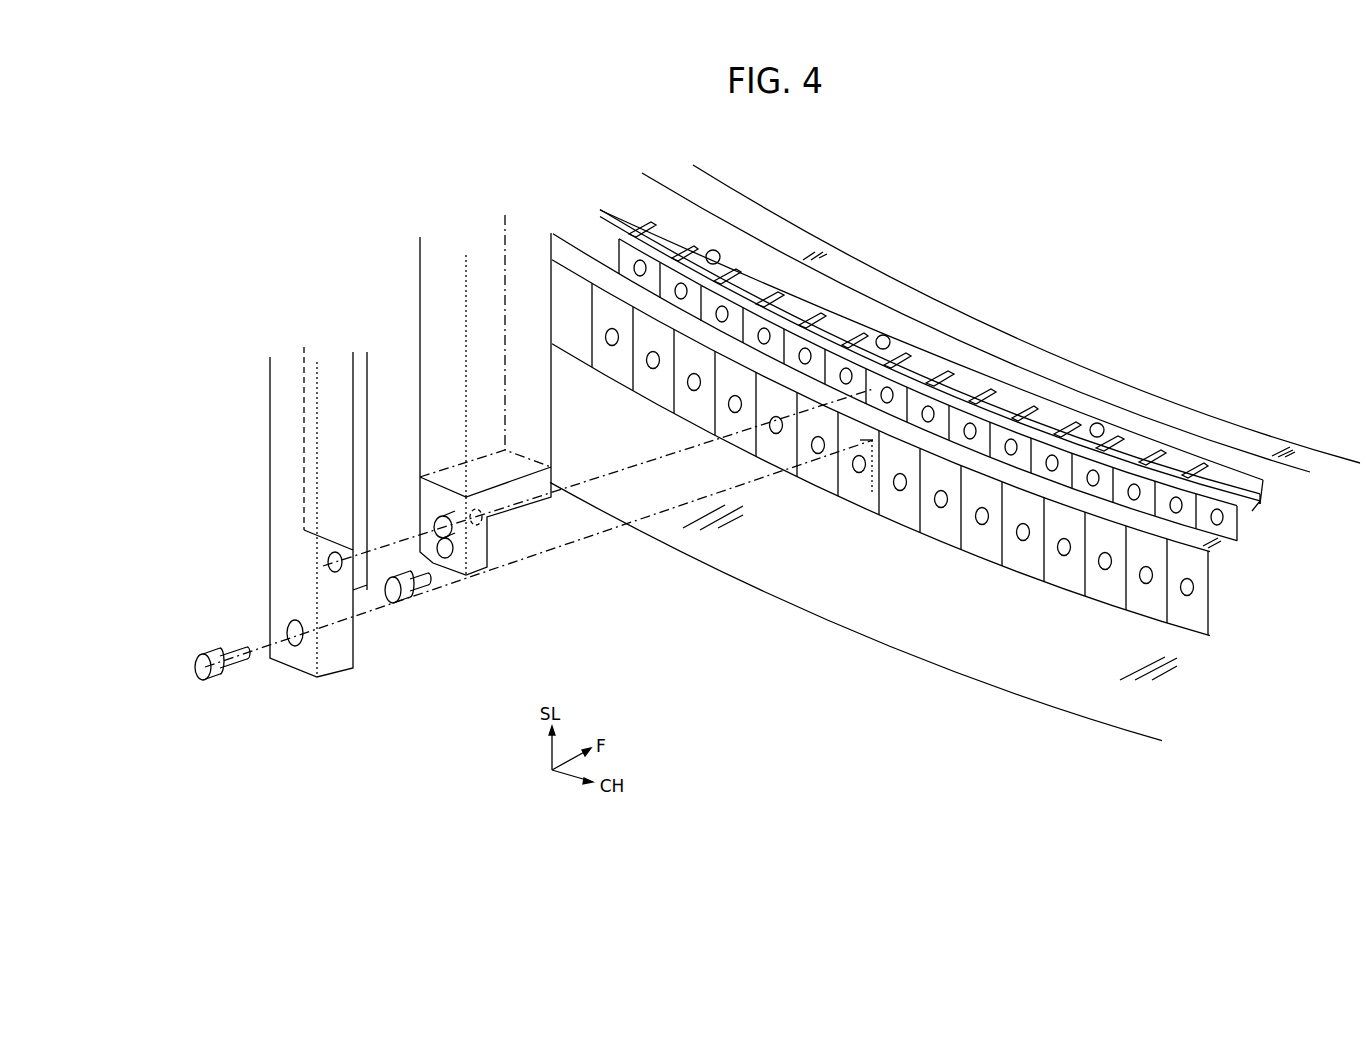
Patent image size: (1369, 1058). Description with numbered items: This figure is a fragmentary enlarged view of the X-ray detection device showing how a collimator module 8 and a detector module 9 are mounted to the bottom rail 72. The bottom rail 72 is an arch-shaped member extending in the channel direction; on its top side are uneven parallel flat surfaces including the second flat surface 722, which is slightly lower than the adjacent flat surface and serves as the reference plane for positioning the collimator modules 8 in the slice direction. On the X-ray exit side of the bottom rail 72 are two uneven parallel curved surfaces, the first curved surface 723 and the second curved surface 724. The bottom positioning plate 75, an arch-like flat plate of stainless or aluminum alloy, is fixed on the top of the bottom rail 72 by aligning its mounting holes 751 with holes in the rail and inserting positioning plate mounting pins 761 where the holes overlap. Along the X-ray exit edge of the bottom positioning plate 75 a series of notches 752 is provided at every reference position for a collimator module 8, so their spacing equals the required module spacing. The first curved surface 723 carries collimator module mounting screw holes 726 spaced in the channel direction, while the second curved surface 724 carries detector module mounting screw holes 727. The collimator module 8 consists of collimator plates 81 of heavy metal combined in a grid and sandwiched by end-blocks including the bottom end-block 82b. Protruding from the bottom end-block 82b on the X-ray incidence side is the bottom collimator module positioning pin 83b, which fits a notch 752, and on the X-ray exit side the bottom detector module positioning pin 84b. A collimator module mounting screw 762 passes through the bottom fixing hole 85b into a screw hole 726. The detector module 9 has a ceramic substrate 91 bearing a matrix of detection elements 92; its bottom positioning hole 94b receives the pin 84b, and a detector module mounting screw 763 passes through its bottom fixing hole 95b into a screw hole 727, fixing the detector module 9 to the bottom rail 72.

The bottom rail 72 is at (1150, 303).
The bottom positioning plate 75 is at (1242, 470).
The mounting holes 751 is at (730, 246).
The notches 752 is at (1030, 403).
The positioning plate mounting pins 761 is at (725, 246).
The second flat surface 722 is at (1262, 508).
The first curved surface 723 is at (1232, 541).
The second curved surface 724 is at (1198, 626).
The collimator module mounting screw holes 726 is at (1011, 455).
The detector module mounting screw holes 727 is at (818, 453).
The collimator module 8 is at (410, 257).
The collimator plates 81 is at (427, 300).
The bottom end-block 82b is at (478, 563).
The bottom collimator module positioning pin 83b is at (473, 517).
The bottom detector module positioning pin 84b is at (433, 522).
The bottom fixing hole 85b is at (443, 552).
The detector module 9 is at (262, 380).
The substrate 91 is at (273, 528).
The detection elements 92 is at (360, 418).
The bottom positioning hole 94b is at (332, 574).
The bottom fixing hole 95b is at (295, 648).
The collimator module mounting screws 762 is at (390, 600).
The detector module mounting screws 763 is at (202, 680).